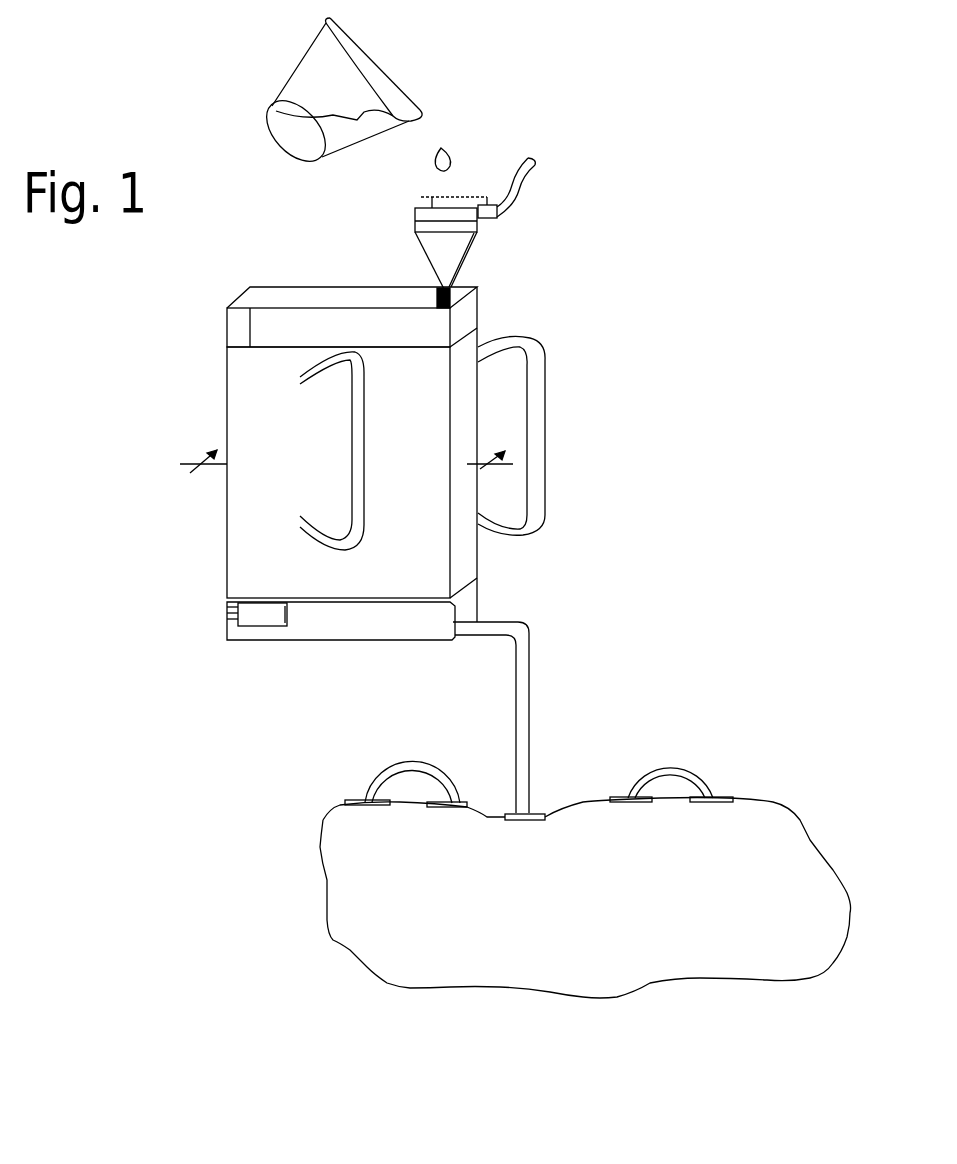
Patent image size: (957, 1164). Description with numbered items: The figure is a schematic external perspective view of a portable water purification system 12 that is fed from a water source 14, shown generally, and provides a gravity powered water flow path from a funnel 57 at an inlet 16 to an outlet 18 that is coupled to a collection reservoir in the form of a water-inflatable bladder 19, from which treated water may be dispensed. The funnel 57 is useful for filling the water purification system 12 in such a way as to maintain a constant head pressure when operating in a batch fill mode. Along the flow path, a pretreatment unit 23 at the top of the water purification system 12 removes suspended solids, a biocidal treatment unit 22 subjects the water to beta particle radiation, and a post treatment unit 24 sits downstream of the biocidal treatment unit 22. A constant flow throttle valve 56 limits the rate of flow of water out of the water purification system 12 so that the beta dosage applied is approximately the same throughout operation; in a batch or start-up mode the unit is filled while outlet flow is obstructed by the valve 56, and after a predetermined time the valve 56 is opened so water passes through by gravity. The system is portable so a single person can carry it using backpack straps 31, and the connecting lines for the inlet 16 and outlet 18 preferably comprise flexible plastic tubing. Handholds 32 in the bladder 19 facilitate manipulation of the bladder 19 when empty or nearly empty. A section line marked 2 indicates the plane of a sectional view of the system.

The portable water purification system 12 is at (379, 470).
The water source 14 is at (300, 67).
The inlet 16 is at (516, 199).
The outlet 18 is at (529, 672).
The water-inflatable bladder 19 is at (327, 940).
The biocidal treatment unit 22 is at (227, 408).
The pretreatment unit 23 is at (227, 336).
The post treatment unit 24 is at (227, 640).
The backpack straps 31 is at (366, 420).
The handholds 32 is at (400, 763).
The constant flow throttle valve 56 is at (227, 606).
The funnel 57 is at (415, 229).
The section line 2- 2 is at (346, 472).